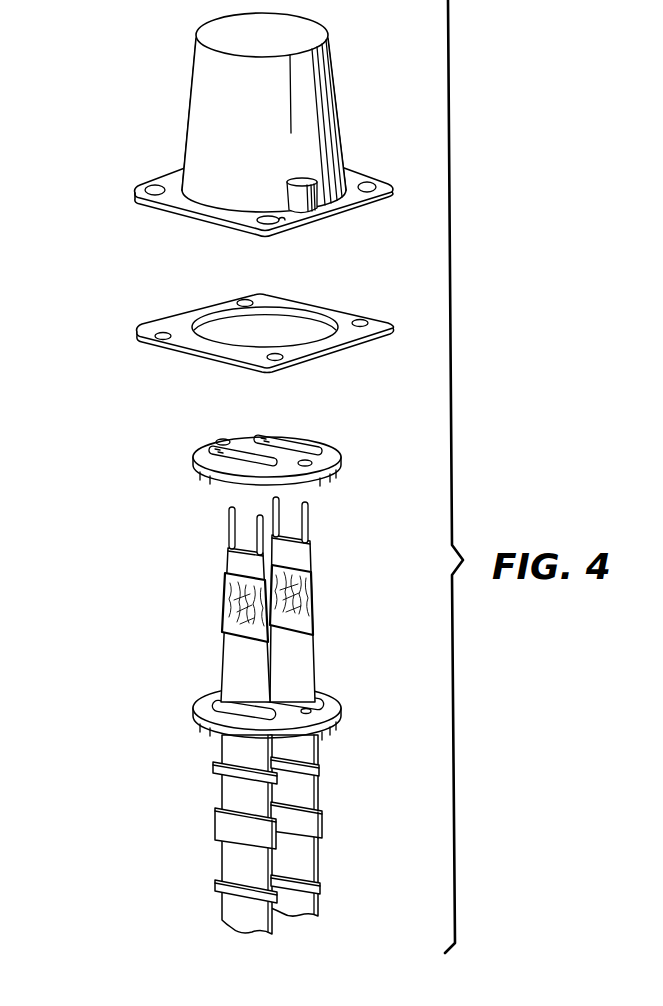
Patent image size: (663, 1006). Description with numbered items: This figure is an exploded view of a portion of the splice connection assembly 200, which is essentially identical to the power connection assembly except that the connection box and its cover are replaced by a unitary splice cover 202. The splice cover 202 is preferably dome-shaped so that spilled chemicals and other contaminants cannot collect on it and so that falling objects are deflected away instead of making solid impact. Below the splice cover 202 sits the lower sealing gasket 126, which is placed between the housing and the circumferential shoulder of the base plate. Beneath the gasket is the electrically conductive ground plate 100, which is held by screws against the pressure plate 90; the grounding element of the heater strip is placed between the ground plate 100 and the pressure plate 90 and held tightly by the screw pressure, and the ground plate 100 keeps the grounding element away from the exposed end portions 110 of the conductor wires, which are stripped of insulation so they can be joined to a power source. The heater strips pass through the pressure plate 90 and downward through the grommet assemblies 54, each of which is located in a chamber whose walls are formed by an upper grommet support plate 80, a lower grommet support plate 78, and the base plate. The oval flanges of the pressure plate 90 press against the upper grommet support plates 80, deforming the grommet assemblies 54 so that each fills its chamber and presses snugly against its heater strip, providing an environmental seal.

The unitary splice cover 202 is at (198, 72).
The lower sealing gasket 126 is at (340, 312).
The ground plate 100 is at (330, 448).
The exposed end portion of conductor wires 110 is at (308, 513).
The pressure plate 90 is at (328, 692).
The upper grommet support plate 80 is at (318, 783).
The grommet assembly 54 is at (322, 822).
The lower grommet support plate 78 is at (318, 900).
The splice connection assembly 200 is at (140, 870).